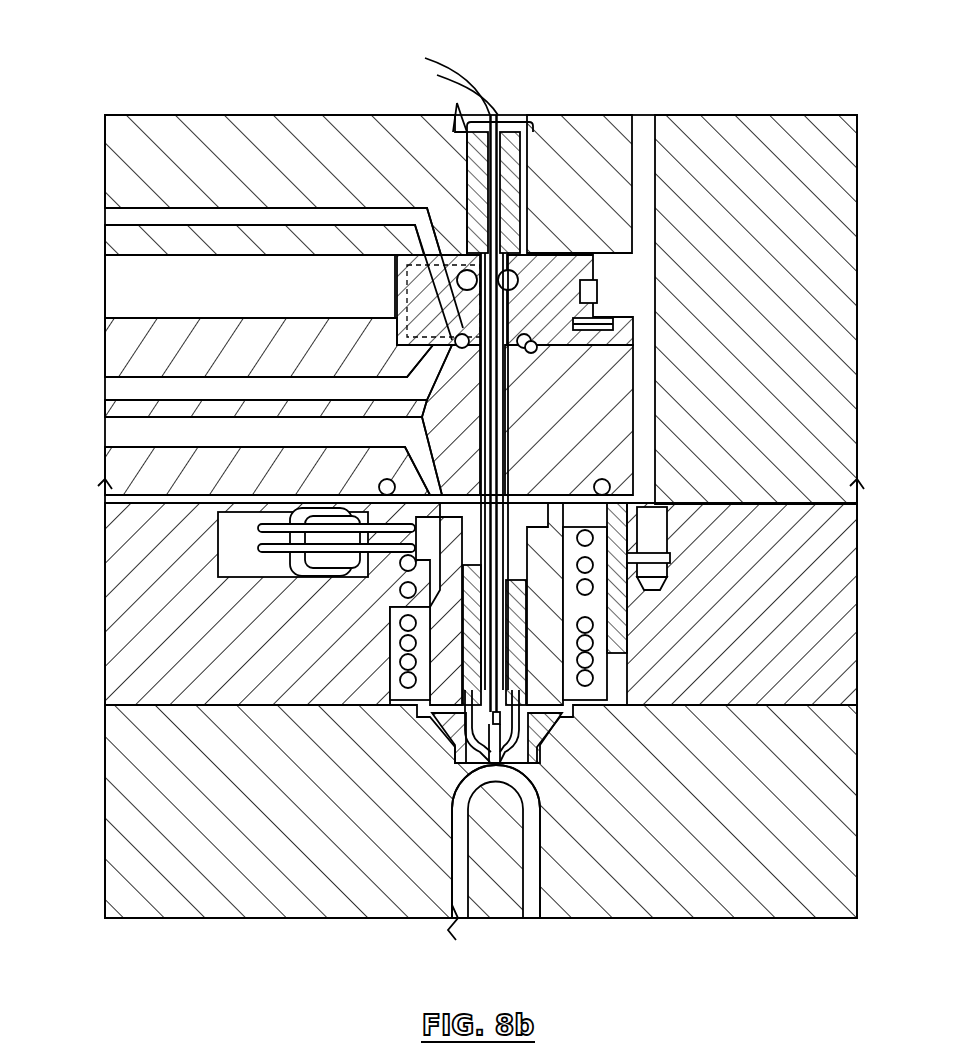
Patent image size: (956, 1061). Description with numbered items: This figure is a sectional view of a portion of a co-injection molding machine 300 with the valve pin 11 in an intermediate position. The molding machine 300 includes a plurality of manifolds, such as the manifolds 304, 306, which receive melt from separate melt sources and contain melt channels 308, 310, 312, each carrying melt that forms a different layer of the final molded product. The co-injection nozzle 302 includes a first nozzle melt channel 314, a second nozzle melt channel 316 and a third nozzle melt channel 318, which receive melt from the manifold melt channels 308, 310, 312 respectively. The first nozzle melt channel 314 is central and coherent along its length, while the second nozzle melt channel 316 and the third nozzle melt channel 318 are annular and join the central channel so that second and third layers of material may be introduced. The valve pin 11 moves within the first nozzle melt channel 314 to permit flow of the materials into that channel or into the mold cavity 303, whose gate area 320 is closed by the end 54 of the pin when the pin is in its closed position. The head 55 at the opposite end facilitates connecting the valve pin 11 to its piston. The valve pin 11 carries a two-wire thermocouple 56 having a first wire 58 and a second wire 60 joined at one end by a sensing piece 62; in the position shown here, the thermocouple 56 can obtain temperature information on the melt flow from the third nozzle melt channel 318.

The co-injection molding machine 300 is at (303, 78).
The manifold 304 is at (215, 115).
The first electrical conduit 58 is at (443, 65).
The second electrical conduit 60 is at (433, 75).
The head 55 is at (515, 272).
The melt channel 308 is at (125, 216).
The manifold 306 is at (233, 333).
The first nozzle melt channel 314 is at (580, 292).
The melt channel 310 is at (125, 387).
The melt channel 312 is at (125, 429).
The valve pin 11 is at (513, 398).
The second nozzle melt channel 316 is at (600, 362).
The thermocouple 56 is at (510, 438).
The co-injection nozzle 302 is at (563, 578).
The third nozzle melt channel 318 is at (447, 740).
The sensing piece 62 is at (547, 755).
The gate area 320 is at (480, 784).
The end 54 is at (482, 783).
The mold cavity 303 is at (537, 872).